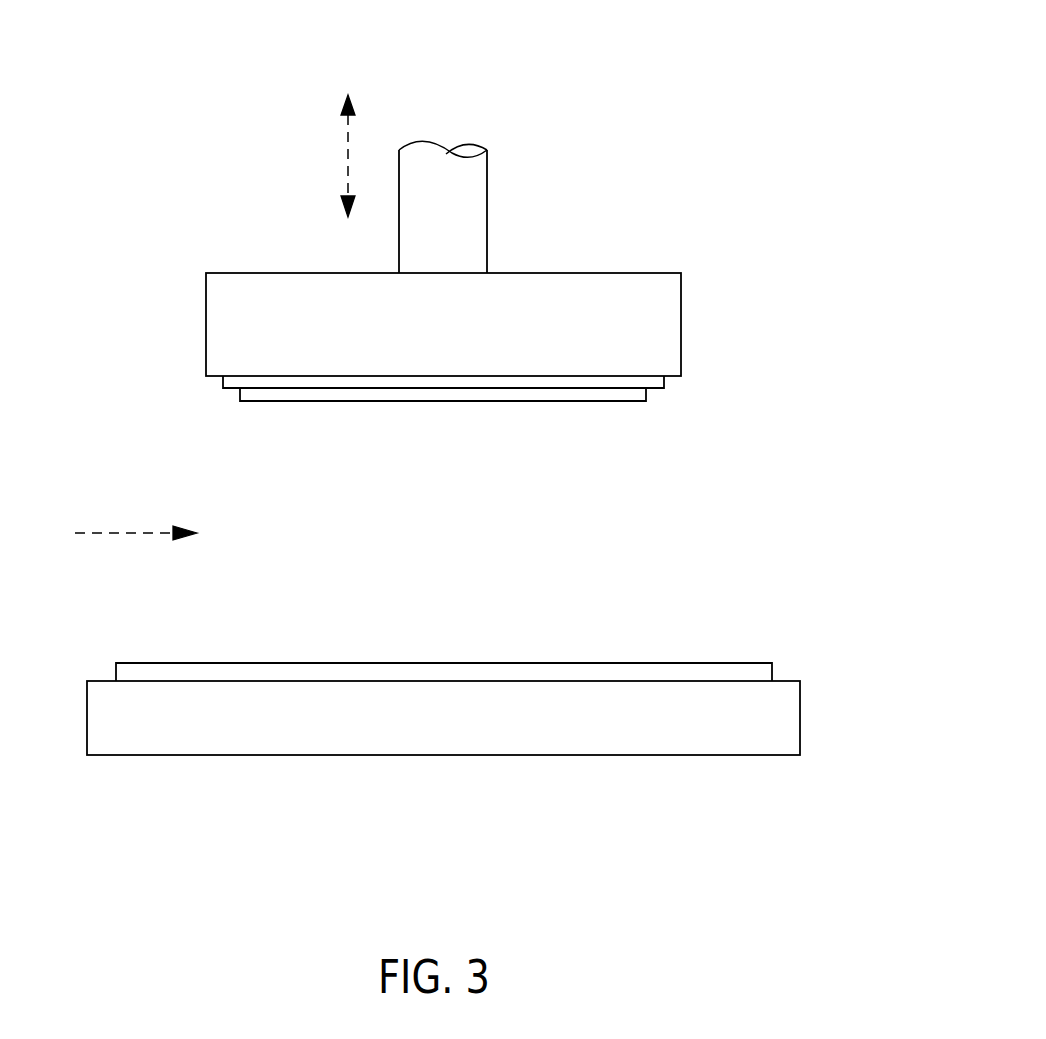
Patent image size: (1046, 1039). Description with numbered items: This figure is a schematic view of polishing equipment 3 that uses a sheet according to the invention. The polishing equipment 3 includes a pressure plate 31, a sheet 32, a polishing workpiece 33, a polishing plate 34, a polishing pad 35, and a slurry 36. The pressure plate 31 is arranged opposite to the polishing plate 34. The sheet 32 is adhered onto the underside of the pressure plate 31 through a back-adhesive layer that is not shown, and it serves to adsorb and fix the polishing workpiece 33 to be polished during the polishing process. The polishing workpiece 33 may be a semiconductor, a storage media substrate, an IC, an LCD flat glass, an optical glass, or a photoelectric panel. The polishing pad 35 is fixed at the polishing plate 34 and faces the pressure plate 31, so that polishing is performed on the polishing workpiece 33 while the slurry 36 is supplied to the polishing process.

The polishing equipment 3 is at (743, 166).
The pressure plate 31 is at (668, 328).
The sheet 32 is at (668, 381).
The polishing workpiece 33 is at (632, 394).
The polishing plate 34 is at (787, 714).
The polishing pad 35 is at (742, 672).
The slurry 36 is at (125, 533).